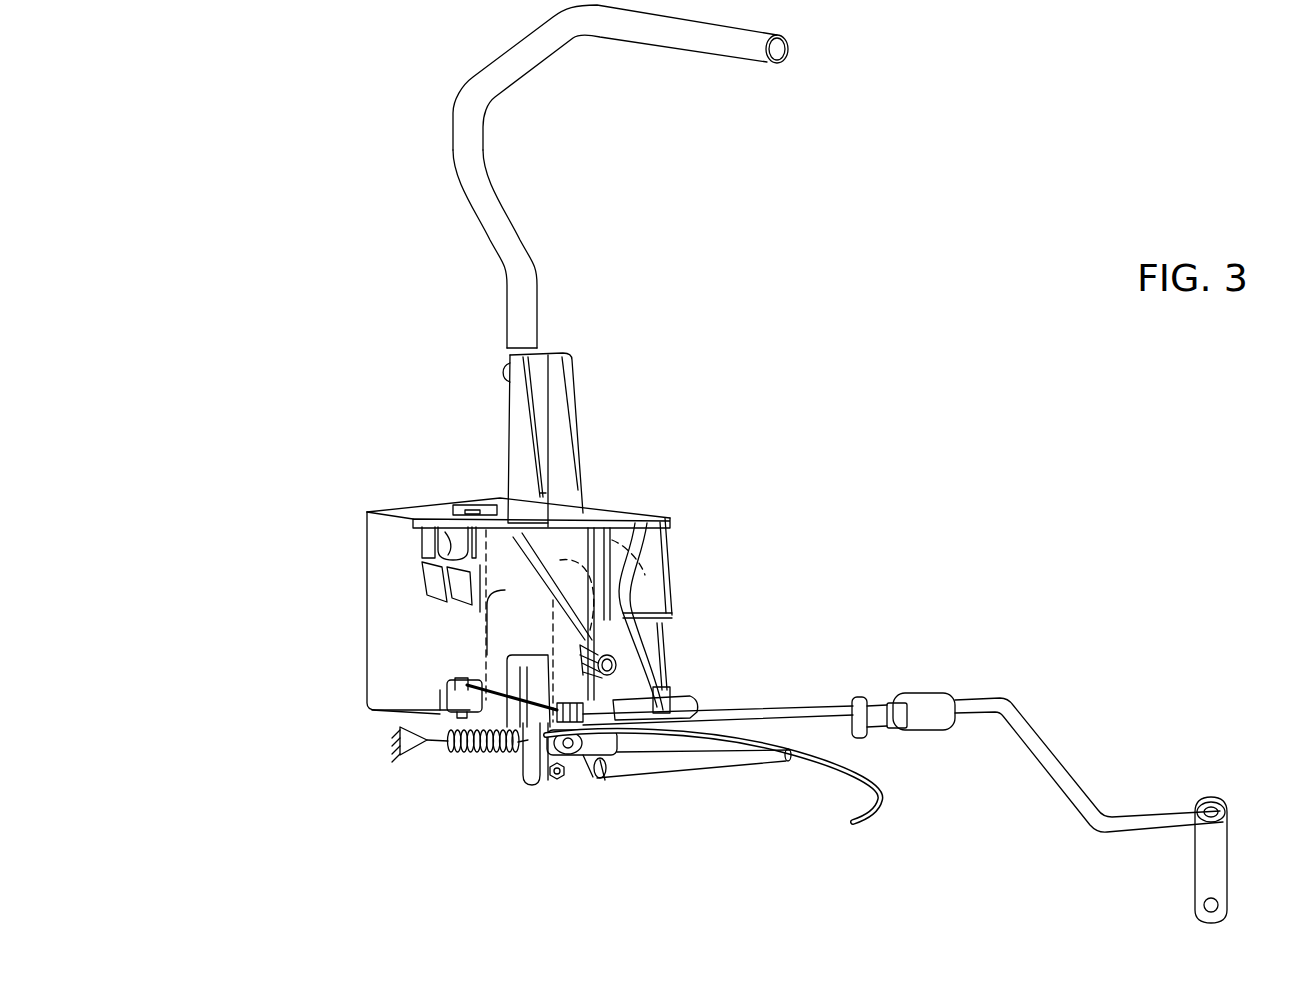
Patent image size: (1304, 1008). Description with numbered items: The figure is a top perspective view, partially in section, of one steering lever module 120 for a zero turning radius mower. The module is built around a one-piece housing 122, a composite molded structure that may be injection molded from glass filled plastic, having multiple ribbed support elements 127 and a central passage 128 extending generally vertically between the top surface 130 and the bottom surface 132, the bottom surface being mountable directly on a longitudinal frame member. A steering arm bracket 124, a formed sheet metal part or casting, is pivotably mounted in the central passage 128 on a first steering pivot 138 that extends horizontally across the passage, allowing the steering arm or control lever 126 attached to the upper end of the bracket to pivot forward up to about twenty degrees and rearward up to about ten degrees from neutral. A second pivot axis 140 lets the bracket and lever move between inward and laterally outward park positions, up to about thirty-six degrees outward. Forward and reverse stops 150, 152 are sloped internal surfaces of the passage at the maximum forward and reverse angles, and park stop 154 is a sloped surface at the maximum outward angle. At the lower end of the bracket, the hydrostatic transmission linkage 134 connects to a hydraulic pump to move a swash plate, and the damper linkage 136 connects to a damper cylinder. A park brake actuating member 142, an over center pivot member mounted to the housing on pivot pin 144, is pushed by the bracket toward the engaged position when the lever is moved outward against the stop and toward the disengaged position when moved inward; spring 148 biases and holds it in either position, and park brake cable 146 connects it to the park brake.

The steering lever module 120 is at (318, 80).
The housing 122 is at (390, 567).
The steering arm bracket 124 is at (537, 395).
The steering arm or control lever 126 is at (523, 290).
The ribbed support elements 127 is at (663, 520).
The central passage 128 is at (507, 530).
The top surface 130 is at (420, 517).
The bottom surface 132 is at (378, 710).
The hydrostatic transmission linkage 134 is at (747, 717).
The damper linkage 136 is at (692, 757).
The first steering pivot 138 is at (630, 642).
The second pivot axis 140 is at (610, 573).
The park brake actuating member 142 is at (485, 753).
The pivot pin 144 is at (483, 643).
The park brake cable 146 is at (522, 757).
The spring 148 is at (462, 757).
The forward stop 150 is at (497, 503).
The reverse stop 152 is at (590, 503).
The park stop 154 is at (473, 507).